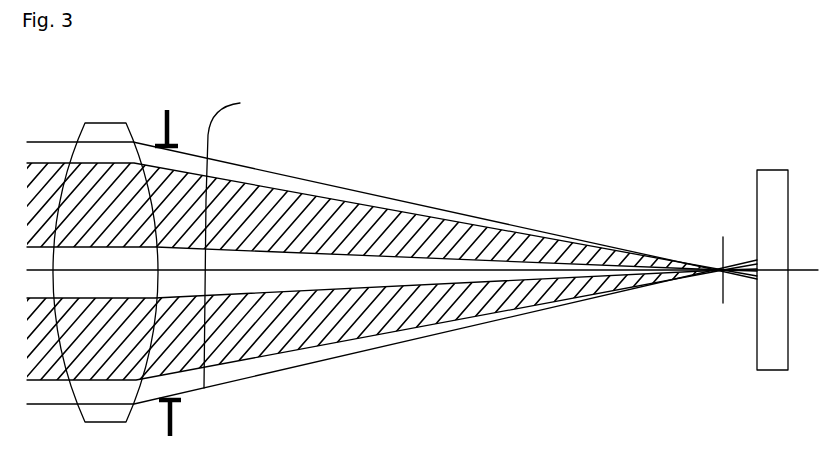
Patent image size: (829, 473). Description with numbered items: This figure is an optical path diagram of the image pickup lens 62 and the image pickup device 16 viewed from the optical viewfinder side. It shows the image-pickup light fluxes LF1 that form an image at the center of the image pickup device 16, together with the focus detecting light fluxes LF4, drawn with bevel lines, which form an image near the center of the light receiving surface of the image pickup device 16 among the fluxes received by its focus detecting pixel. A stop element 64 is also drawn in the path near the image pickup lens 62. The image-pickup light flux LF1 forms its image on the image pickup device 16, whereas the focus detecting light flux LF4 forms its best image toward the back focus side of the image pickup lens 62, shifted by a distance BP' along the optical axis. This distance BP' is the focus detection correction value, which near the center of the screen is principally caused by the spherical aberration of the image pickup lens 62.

The image pickup lens 62 is at (103, 127).
The aperture stop 64 is at (163, 122).
The focus detecting light flux LF4 is at (178, 188).
The image-pickup light flux LF1 is at (192, 158).
The focus detection correction value BP' is at (737, 257).
The image pickup device 16 is at (771, 172).